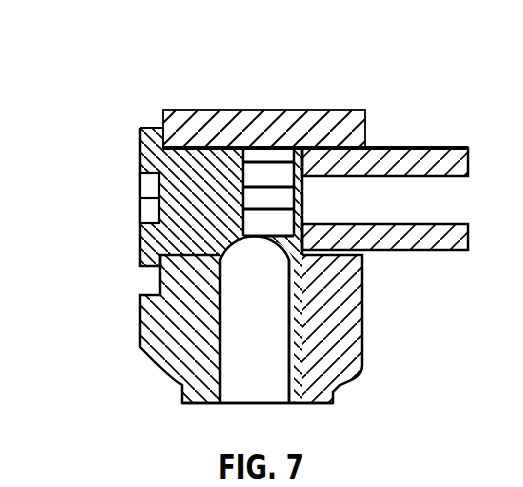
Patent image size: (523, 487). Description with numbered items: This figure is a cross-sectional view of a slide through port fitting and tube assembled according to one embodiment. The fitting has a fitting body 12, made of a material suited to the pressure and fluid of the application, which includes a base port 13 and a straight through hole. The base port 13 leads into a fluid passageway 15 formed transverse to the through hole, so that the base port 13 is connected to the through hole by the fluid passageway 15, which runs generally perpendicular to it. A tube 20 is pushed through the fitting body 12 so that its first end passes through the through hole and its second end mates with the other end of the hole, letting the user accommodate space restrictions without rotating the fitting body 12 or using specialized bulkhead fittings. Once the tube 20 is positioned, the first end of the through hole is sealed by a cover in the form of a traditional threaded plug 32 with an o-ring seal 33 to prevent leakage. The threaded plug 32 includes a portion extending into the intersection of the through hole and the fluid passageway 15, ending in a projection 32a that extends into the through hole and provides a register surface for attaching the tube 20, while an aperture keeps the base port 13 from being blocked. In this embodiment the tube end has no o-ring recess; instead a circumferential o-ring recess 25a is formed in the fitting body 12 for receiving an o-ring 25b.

The fitting body 12 is at (142, 330).
The base port 13 is at (303, 403).
The fluid passageway 15 is at (262, 370).
The tube 20 is at (326, 189).
The circumferential o-ring recess 25a is at (344, 150).
The o-ring 25b is at (347, 252).
The threaded plug 32 is at (140, 160).
The projection 32a is at (268, 173).
The o-ring seal 33 is at (168, 128).